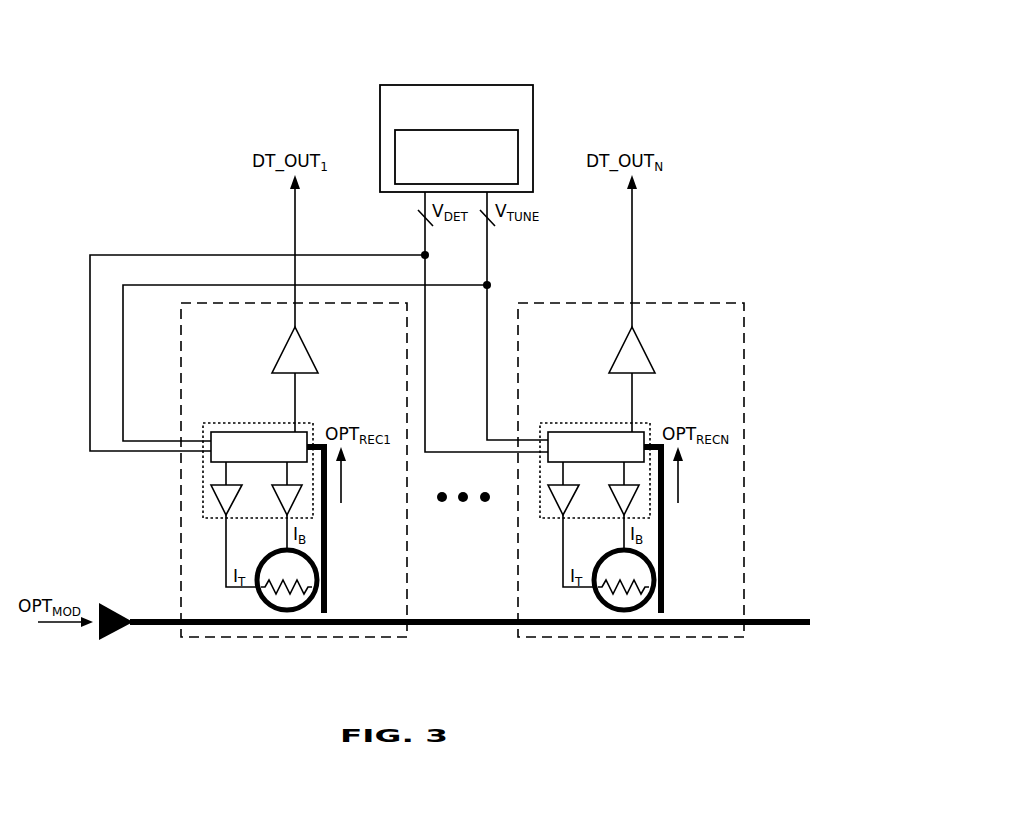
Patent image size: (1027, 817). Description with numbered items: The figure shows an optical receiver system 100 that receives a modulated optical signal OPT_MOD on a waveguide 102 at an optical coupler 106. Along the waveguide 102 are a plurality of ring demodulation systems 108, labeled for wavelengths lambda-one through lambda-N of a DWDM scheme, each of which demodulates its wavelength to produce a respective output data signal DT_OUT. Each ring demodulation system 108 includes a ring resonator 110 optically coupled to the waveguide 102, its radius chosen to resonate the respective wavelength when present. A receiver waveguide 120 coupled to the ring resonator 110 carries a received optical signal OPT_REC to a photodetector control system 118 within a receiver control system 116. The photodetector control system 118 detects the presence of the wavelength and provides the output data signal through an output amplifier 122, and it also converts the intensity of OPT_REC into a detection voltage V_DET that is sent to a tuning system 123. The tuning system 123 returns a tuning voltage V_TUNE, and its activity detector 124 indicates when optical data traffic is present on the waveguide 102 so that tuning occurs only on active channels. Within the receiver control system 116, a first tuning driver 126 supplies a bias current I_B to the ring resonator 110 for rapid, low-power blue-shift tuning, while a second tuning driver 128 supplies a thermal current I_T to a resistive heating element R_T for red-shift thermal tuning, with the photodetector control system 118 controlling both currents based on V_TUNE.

The optical receiver system 100 is at (98, 33).
The waveguide 102 is at (484, 626).
The optical coupler 106 is at (117, 638).
The ring demodulation system 108 is at (703, 303).
The ring resonator 110 is at (262, 598).
The receiver control system 116 is at (200, 505).
The photodetector control system 118 is at (211, 458).
The receiver waveguide 120 is at (328, 555).
The output amplifier 122 is at (313, 350).
The tuning system 123 is at (380, 95).
The activity detector 124 is at (412, 184).
The first tuning driver 126 is at (302, 497).
The second tuning driver 128 is at (222, 510).